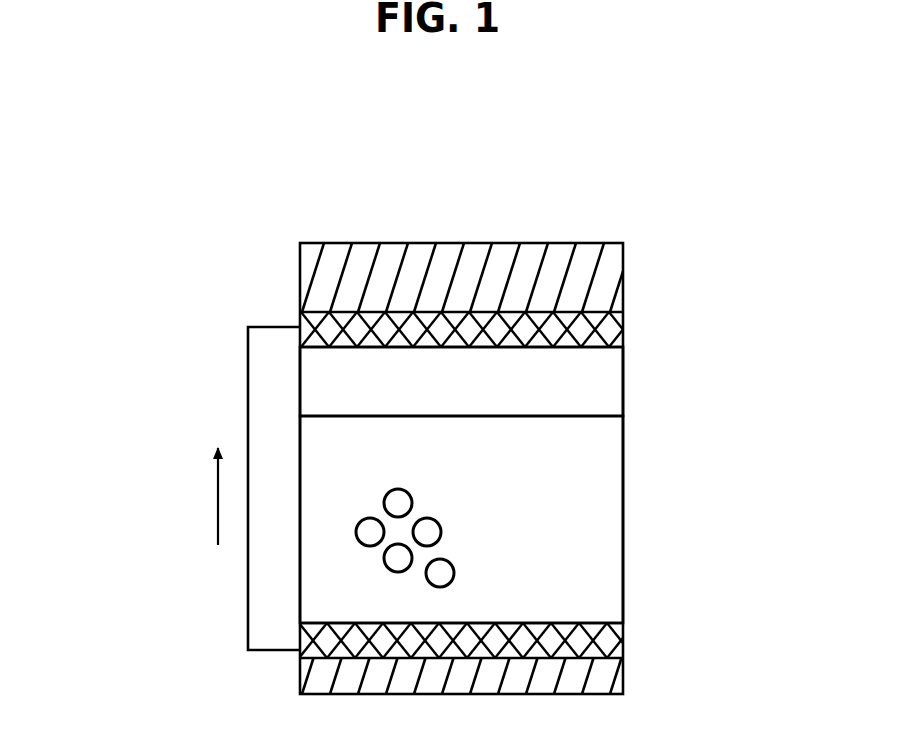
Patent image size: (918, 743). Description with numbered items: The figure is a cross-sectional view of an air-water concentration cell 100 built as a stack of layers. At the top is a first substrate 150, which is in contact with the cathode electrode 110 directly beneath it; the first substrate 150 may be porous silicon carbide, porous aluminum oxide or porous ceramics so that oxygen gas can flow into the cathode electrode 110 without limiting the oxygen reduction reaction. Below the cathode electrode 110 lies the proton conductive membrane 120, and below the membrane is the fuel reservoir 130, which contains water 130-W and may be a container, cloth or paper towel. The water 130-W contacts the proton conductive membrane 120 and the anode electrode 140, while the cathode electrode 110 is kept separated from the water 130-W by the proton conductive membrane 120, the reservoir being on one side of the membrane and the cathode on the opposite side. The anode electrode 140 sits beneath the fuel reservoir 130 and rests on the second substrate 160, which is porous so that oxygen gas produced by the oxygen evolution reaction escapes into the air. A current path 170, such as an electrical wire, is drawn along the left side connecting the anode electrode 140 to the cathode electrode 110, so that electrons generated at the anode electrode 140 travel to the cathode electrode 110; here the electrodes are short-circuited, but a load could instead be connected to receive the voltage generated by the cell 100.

The air-water concentration cell 100 is at (188, 158).
The cathode electrode 110 is at (624, 327).
The proton conductive membrane 120 is at (624, 382).
The fuel reservoir 130 is at (624, 523).
The water 130-W is at (355, 547).
The anode electrode 140 is at (624, 642).
The first substrate 150 is at (624, 278).
The second substrate 160 is at (624, 677).
The current path 170 is at (247, 367).